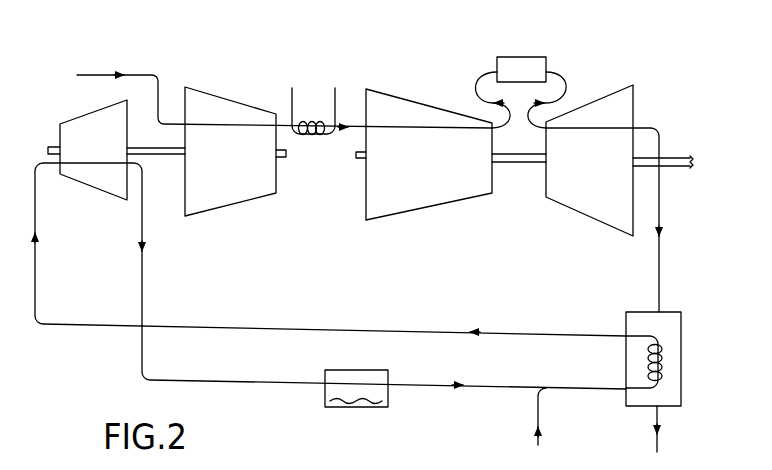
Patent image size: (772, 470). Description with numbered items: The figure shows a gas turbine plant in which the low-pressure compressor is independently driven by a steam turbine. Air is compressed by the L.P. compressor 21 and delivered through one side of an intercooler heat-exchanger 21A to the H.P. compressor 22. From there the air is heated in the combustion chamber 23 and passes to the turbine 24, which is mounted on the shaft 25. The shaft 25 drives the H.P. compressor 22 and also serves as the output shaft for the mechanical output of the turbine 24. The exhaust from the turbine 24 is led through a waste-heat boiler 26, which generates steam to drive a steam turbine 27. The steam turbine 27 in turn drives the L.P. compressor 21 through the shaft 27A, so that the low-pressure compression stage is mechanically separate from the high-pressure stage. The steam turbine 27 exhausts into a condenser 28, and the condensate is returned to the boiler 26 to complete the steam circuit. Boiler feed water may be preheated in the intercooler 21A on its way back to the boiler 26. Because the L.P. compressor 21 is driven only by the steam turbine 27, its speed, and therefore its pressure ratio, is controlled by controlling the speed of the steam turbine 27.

The L.P. compressor 21 is at (234, 163).
The intercooler heat-exchanger 21A is at (315, 153).
The H.P. compressor 22 is at (432, 171).
The combustion chamber 23 is at (518, 68).
The turbine 24 is at (597, 180).
The shaft 25 is at (518, 167).
The waste-heat boiler 26 is at (637, 319).
The steam turbine 27 is at (105, 148).
The shaft 27A is at (163, 158).
The condenser 28 is at (370, 402).